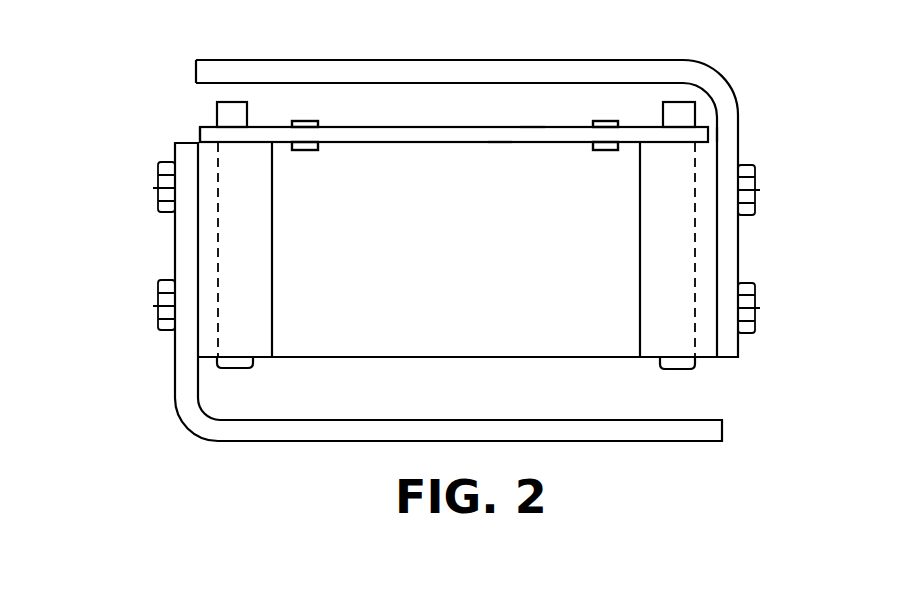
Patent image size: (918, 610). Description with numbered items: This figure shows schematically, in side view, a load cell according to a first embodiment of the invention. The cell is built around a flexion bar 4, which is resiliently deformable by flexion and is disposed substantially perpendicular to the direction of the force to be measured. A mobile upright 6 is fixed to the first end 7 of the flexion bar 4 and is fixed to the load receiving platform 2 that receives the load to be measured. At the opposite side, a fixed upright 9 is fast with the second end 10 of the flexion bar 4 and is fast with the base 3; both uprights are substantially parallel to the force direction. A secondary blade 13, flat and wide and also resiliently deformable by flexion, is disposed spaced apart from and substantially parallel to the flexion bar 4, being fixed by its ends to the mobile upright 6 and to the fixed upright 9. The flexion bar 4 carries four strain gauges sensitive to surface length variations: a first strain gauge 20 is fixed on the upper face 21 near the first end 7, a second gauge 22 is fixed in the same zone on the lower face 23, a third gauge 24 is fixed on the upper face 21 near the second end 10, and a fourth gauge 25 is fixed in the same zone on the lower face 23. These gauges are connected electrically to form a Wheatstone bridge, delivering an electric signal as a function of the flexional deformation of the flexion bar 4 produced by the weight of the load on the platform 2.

The load receiving platform 2 is at (370, 61).
The base 3 is at (303, 440).
The flexion bar 4 is at (457, 127).
The mobile upright 6 is at (713, 260).
The first end 7 is at (713, 130).
The fixed upright 9 is at (203, 243).
The second end 10 is at (200, 133).
The secondary blade 13 is at (547, 357).
The first strain gauge 20 is at (603, 122).
The upper face 21 is at (531, 125).
The second gauge 22 is at (605, 150).
The lower face 23 is at (500, 147).
The third gauge 24 is at (307, 121).
The fourth gauge 25 is at (307, 150).